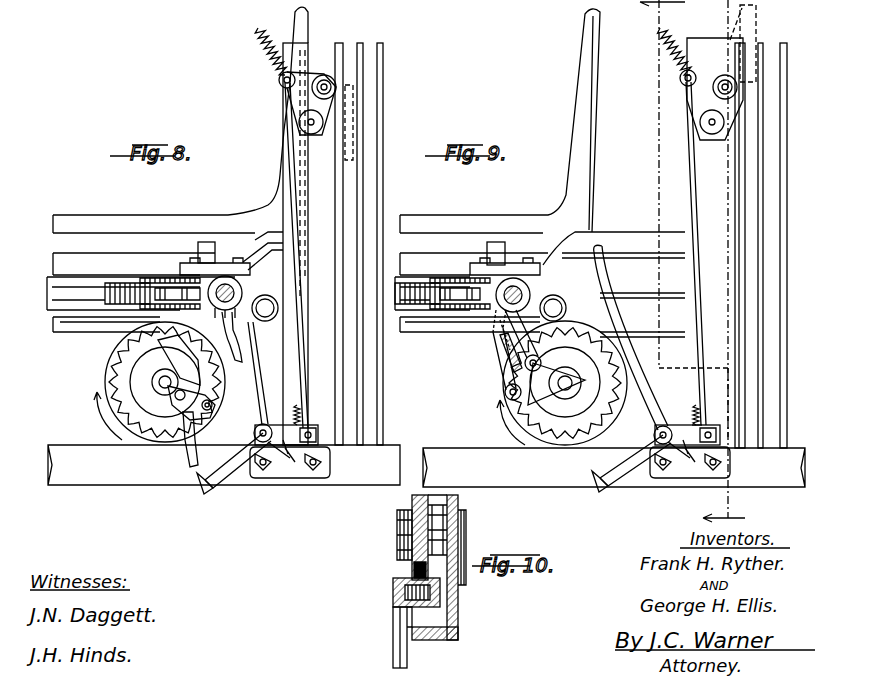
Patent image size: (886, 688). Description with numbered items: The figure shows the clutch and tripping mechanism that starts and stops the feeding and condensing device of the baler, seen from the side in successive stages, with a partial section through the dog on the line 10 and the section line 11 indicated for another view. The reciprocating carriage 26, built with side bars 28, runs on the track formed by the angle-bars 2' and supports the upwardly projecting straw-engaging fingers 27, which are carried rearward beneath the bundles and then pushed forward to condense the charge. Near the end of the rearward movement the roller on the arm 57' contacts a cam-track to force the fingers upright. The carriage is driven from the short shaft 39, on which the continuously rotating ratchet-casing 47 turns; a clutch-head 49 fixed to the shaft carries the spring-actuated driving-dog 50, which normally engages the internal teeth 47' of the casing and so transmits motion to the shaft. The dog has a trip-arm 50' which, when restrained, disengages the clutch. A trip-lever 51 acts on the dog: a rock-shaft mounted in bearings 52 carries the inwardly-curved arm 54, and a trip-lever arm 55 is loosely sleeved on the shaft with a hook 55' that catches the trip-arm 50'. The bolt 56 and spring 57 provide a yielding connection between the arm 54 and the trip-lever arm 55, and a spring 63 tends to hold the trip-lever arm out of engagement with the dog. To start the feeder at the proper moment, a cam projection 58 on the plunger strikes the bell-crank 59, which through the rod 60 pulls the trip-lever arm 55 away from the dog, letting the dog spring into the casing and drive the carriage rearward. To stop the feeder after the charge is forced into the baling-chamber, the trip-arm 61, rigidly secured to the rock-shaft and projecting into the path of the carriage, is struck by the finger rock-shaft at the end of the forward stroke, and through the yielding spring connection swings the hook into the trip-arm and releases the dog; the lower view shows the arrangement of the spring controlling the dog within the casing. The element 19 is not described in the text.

In FIG. 8, the angle-bars 2' is at (138, 287).
In FIG. 9, the angle-bars 2' is at (535, 287).
In FIG. 8, the section line 10 is at (142, 349).
In FIG. 9, the section line 11 is at (704, 262).
In FIG. 8, the inner ring 19 is at (155, 392).
In FIG. 8, the carriage 26 is at (50, 312).
In FIG. 9, the carriage 26 is at (410, 312).
In FIG. 8, the straw-engaging fingers 27 is at (277, 176).
In FIG. 9, the straw-engaging fingers 27 is at (593, 131).
In FIG. 8, the side bars 28 is at (80, 317).
In FIG. 9, the side bars 28 is at (452, 317).
In FIG. 8, the short shaft 39 is at (168, 378).
In FIG. 9, the short shaft 39 is at (565, 400).
In FIG. 8, the ratchet-casing 47 is at (143, 382).
In FIG. 9, the ratchet-casing 47 is at (565, 393).
In FIG. 10, the ratchet-casing 47 is at (449, 567).
In FIG. 8, the internal teeth 47' is at (95, 416).
In FIG. 9, the internal teeth 47' is at (569, 422).
In FIG. 9, the clutch-head 49 is at (565, 372).
In FIG. 10, the clutch-head 49 is at (410, 564).
In FIG. 8, the driving-dog 50 is at (197, 408).
In FIG. 9, the driving-dog 50 is at (494, 364).
In FIG. 10, the driving-dog 50 is at (399, 592).
In FIG. 8, the trip-arm 50' is at (163, 439).
In FIG. 9, the trip-arm 50' is at (489, 337).
In FIG. 10, the trip-arm 50' is at (387, 637).
In FIG. 8, the trip-lever 51 is at (228, 290).
In FIG. 9, the trip-lever 51 is at (508, 290).
In FIG. 8, the bearings 52 is at (245, 288).
In FIG. 9, the bearings 52 is at (535, 288).
In FIG. 8, the inwardly-curved arm 54 is at (212, 242).
In FIG. 9, the inwardly-curved arm 54 is at (500, 242).
In FIG. 8, the trip-lever arm 55 is at (202, 382).
In FIG. 9, the trip-lever arm 55 is at (550, 382).
In FIG. 8, the hook 55' is at (190, 490).
In FIG. 9, the hook 55' is at (593, 489).
In FIG. 8, the bolt 56 is at (198, 255).
In FIG. 9, the bolt 56 is at (488, 255).
In FIG. 8, the spring 57 is at (277, 373).
In FIG. 9, the spring 57 is at (710, 387).
In FIG. 8, the arm 57' is at (250, 329).
In FIG. 9, the arm 57' is at (516, 318).
In FIG. 8, the cam projection 58 is at (311, 135).
In FIG. 9, the cam projection 58 is at (735, 32).
In FIG. 8, the bell-crank 59 is at (322, 76).
In FIG. 9, the bell-crank 59 is at (714, 75).
In FIG. 8, the rod 60 is at (299, 295).
In FIG. 9, the rod 60 is at (698, 250).
In FIG. 9, the trip-arm 61 is at (630, 340).
In FIG. 8, the spring 63 is at (258, 36).
In FIG. 9, the spring 63 is at (660, 36).